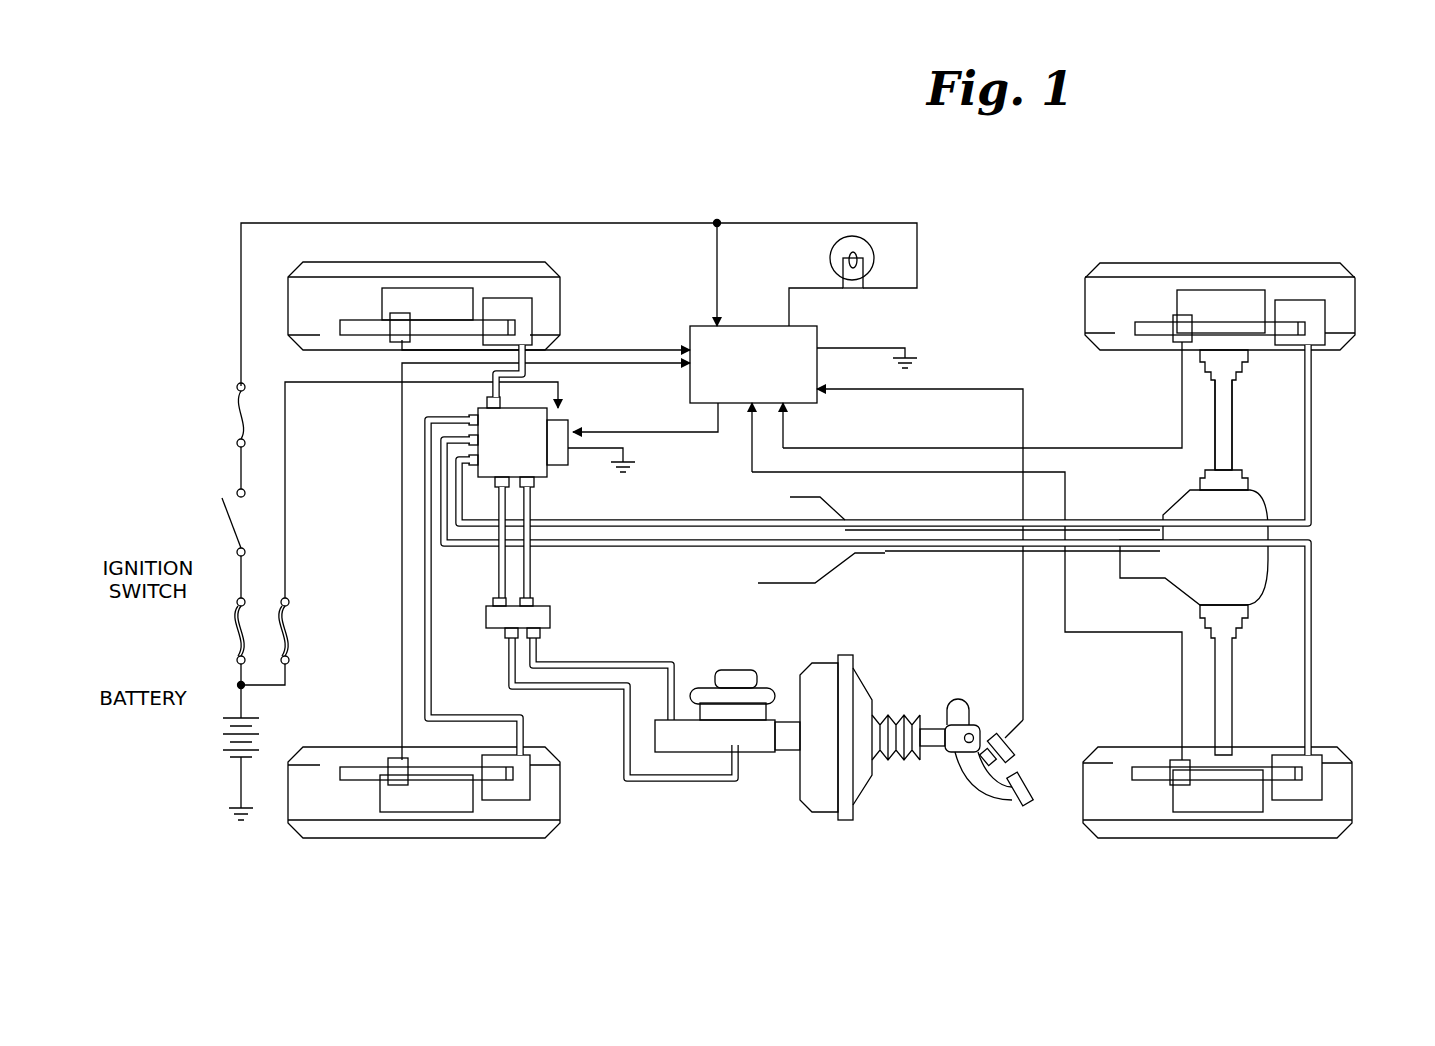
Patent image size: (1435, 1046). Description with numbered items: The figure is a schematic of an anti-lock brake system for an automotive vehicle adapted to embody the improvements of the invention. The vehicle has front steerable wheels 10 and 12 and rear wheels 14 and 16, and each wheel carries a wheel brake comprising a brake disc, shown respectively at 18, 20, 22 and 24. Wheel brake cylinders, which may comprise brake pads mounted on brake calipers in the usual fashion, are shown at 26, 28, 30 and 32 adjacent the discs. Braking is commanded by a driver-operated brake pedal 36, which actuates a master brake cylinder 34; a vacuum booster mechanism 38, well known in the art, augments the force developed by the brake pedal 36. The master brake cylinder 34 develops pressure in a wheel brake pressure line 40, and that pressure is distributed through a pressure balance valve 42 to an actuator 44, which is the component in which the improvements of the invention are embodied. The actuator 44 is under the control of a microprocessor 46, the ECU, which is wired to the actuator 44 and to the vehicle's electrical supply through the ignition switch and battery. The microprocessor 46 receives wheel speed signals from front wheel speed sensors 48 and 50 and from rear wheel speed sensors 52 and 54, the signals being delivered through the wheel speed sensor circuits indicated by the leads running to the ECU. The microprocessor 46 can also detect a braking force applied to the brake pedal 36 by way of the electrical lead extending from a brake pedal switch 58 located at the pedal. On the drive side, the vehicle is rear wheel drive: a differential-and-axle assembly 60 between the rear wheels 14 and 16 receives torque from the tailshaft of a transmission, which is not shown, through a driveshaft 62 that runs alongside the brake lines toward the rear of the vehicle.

The front steerable wheel 10 is at (565, 300).
The front steerable wheel 12 is at (352, 805).
The rear wheel 14 is at (1345, 292).
The rear wheel 16 is at (1350, 785).
The brake disc 18 is at (435, 335).
The brake disc 20 is at (358, 775).
The brake disc 22 is at (1295, 345).
The brake disc 24 is at (1260, 750).
The wheel brake cylinder 26 is at (530, 298).
The wheel brake cylinder 28 is at (532, 795).
The wheel brake cylinder 30 is at (1290, 300).
The wheel brake cylinder 32 is at (1345, 758).
The master brake cylinder 34 is at (755, 730).
The brake pedal 36 is at (990, 780).
The vacuum booster mechanism 38 is at (820, 805).
The wheel brake pressure line 40 is at (622, 668).
The pressure balance valve 42 is at (552, 615).
The actuator 44 is at (548, 420).
The microprocessor 46 is at (740, 326).
The front wheel speed sensor 48 is at (400, 320).
The front wheel speed sensor 50 is at (398, 785).
The rear wheel speed sensor 52 is at (1187, 315).
The rear wheel speed sensor 54 is at (1183, 785).
The brake pedal switch 58 is at (1003, 740).
The rear wheel drive differential-and-axle assembly 60 is at (1255, 567).
The driveshaft 62 is at (1042, 545).